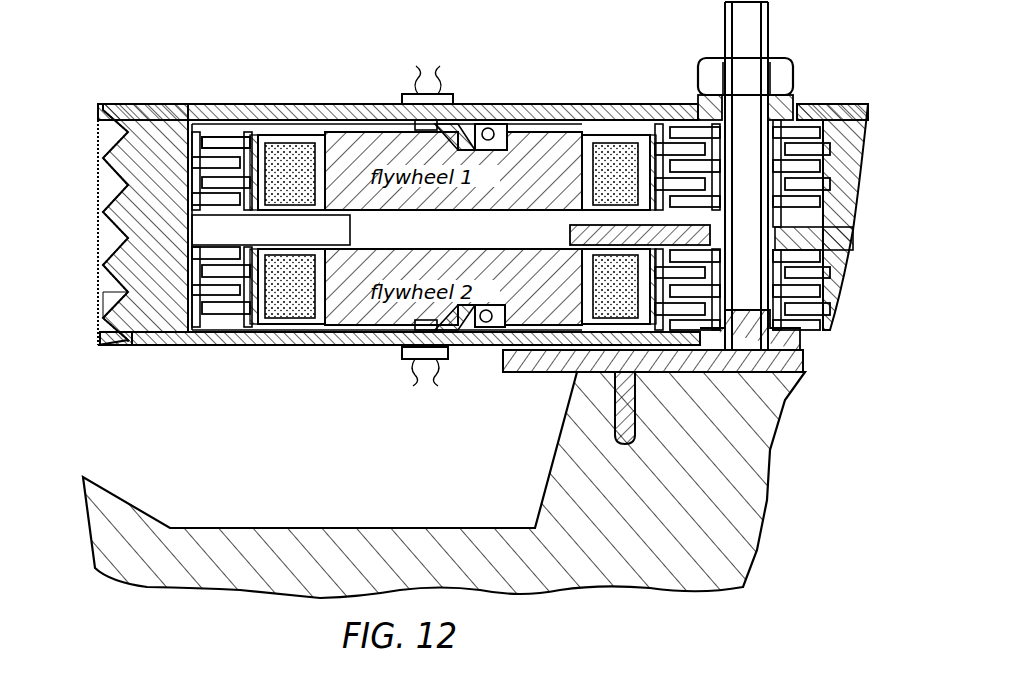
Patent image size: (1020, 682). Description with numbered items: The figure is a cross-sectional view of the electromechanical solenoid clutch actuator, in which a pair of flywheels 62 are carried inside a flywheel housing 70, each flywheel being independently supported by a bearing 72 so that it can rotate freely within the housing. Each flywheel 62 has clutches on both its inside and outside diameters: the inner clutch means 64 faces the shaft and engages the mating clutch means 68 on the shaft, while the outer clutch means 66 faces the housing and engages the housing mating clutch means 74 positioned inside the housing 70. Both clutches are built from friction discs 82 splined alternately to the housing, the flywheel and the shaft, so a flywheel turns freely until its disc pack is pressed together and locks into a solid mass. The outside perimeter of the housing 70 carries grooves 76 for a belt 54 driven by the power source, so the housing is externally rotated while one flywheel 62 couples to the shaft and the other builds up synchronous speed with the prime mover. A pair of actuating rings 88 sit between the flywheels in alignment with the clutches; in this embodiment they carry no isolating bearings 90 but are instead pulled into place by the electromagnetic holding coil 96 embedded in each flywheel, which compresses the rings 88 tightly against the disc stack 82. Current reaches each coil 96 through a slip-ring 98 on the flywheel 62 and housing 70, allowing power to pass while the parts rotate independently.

The belt 54 is at (97, 104).
The flywheel 62 is at (312, 132).
The inner clutch means 64 is at (688, 104).
The outer clutch means 66 is at (194, 132).
The mating clutch means 68 is at (738, 80).
The flywheel housing 70 is at (375, 104).
The bearing 72 is at (500, 124).
The housing mating clutch means 74 is at (160, 104).
The grooves 76 is at (125, 305).
The friction discs 82 is at (232, 136).
The actuating rings 88 is at (650, 224).
The isolating bearings 90 is at (560, 372).
The electromagnetic holding coil 96 is at (190, 158).
The slip-ring 98 is at (450, 94).